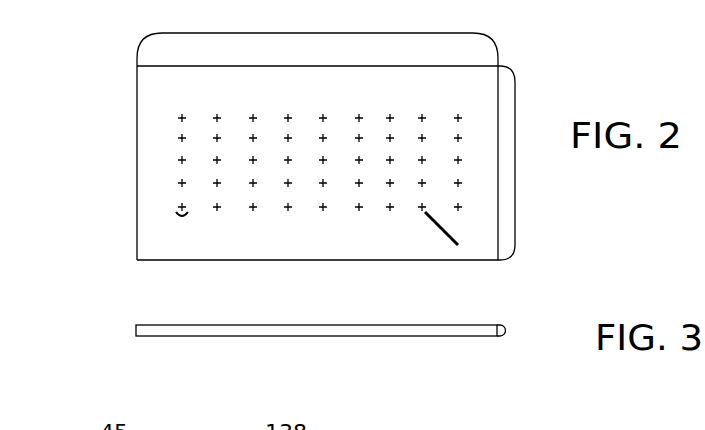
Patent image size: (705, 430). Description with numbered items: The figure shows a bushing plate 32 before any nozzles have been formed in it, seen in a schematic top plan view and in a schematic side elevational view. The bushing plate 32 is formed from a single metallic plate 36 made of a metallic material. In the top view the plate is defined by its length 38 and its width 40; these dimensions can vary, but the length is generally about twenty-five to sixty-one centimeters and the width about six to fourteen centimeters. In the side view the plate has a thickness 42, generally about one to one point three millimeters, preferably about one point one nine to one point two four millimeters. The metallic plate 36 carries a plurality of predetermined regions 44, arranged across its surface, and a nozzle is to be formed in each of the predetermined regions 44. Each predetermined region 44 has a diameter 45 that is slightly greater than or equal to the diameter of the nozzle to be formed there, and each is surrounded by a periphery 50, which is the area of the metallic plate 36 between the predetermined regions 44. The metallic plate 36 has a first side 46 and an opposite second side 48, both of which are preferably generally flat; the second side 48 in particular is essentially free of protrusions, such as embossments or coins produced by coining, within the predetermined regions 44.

In FIG. 2, the bushing plate 32 is at (258, 262).
In FIG. 2, the metallic plate 36 is at (275, 146).
In FIG. 3, the metallic plate 36 is at (136, 331).
In FIG. 2, the length 38 is at (336, 34).
In FIG. 2, the width 40 is at (516, 166).
In FIG. 3, the thickness 42 is at (505, 330).
In FIG. 2, the predetermined regions 44 is at (177, 136).
In FIG. 3, the predetermined regions 44 is at (215, 325).
In FIG. 2, the diameter 45 is at (181, 215).
In FIG. 2, the first side 46 is at (268, 101).
In FIG. 3, the first side 46 is at (398, 325).
In FIG. 3, the second side 48 is at (433, 336).
In FIG. 2, the periphery 50 is at (176, 140).
In FIG. 3, the periphery 50 is at (160, 325).